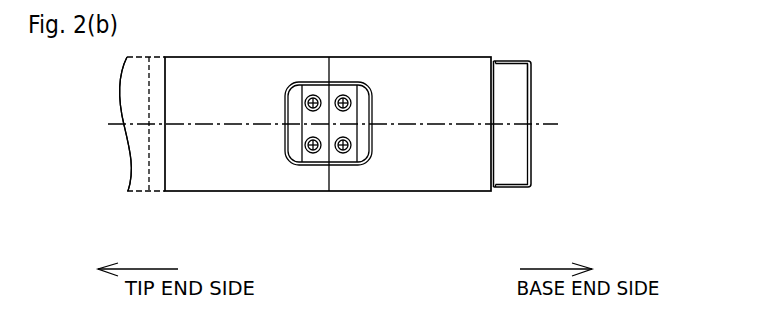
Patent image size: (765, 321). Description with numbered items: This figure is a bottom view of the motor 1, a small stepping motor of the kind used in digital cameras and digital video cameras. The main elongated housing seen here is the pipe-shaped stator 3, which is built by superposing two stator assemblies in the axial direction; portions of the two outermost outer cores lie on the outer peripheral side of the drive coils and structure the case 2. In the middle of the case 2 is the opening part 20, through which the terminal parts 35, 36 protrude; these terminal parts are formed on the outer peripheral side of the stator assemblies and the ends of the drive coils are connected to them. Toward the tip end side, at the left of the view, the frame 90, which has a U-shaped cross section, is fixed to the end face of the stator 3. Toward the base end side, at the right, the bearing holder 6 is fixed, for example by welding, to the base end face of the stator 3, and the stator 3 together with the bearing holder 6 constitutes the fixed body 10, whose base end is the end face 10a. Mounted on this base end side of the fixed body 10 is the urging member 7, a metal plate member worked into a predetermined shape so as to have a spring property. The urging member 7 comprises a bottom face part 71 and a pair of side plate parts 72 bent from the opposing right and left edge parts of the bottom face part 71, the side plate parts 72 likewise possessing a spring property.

The motor 1 is at (440, 38).
The case 2 is at (433, 182).
The stator 3 is at (305, 150).
The bearing holder 6 is at (507, 170).
The urging member 7 is at (531, 165).
The fixed body 10 is at (510, 240).
The end face on the base end side of the fixed body 10a is at (527, 97).
The opening part 20 is at (362, 142).
The terminal part 35 is at (311, 110).
The terminal part 36 is at (343, 111).
The bottom face part 71 is at (531, 144).
The side plate part 72 is at (508, 61).
The frame 90 is at (141, 178).